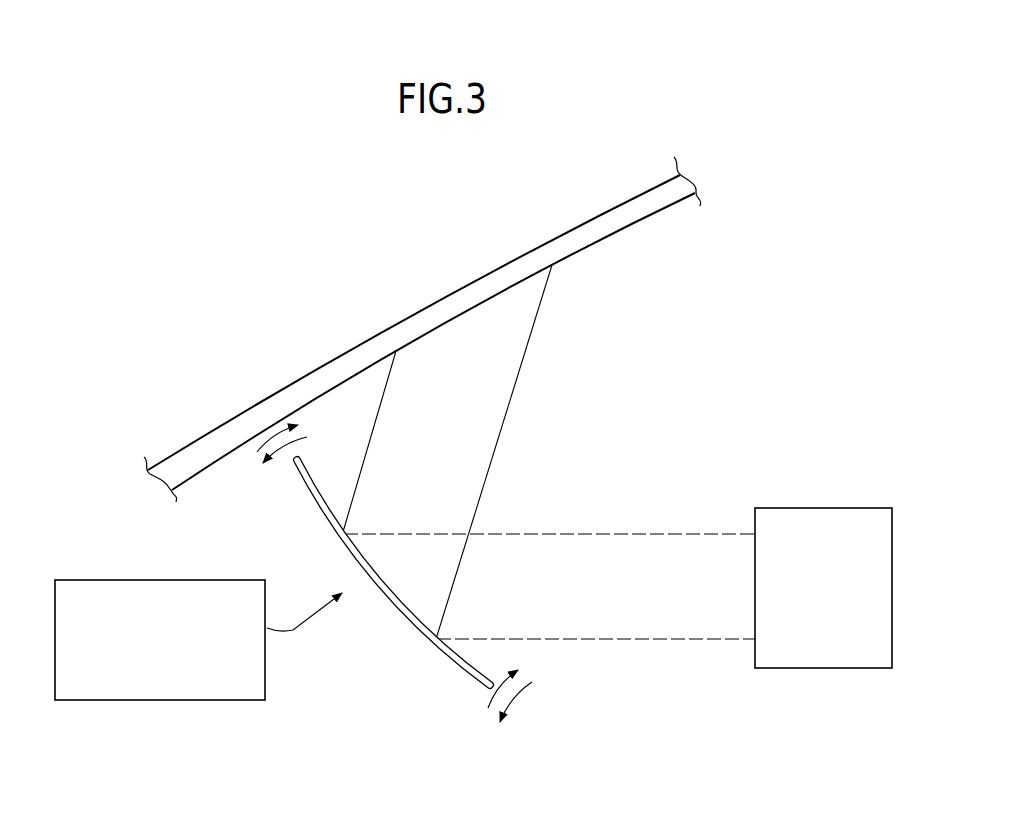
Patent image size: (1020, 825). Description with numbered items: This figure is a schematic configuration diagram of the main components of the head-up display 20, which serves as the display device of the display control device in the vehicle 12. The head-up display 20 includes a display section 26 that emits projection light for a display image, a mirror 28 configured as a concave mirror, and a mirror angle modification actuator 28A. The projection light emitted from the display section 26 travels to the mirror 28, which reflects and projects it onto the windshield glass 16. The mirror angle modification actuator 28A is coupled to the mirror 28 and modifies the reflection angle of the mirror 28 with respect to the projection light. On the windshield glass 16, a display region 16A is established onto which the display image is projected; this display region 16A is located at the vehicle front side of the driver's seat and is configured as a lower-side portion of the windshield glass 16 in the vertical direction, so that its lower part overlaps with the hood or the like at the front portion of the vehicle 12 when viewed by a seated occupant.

The vehicle 12 is at (782, 294).
The windshield glass 16 is at (422, 329).
The display region 16A is at (472, 308).
The head-up display 20 is at (639, 452).
The display section 26 is at (800, 507).
The mirror 28 is at (418, 647).
The mirror angle modification actuator 28A is at (152, 580).